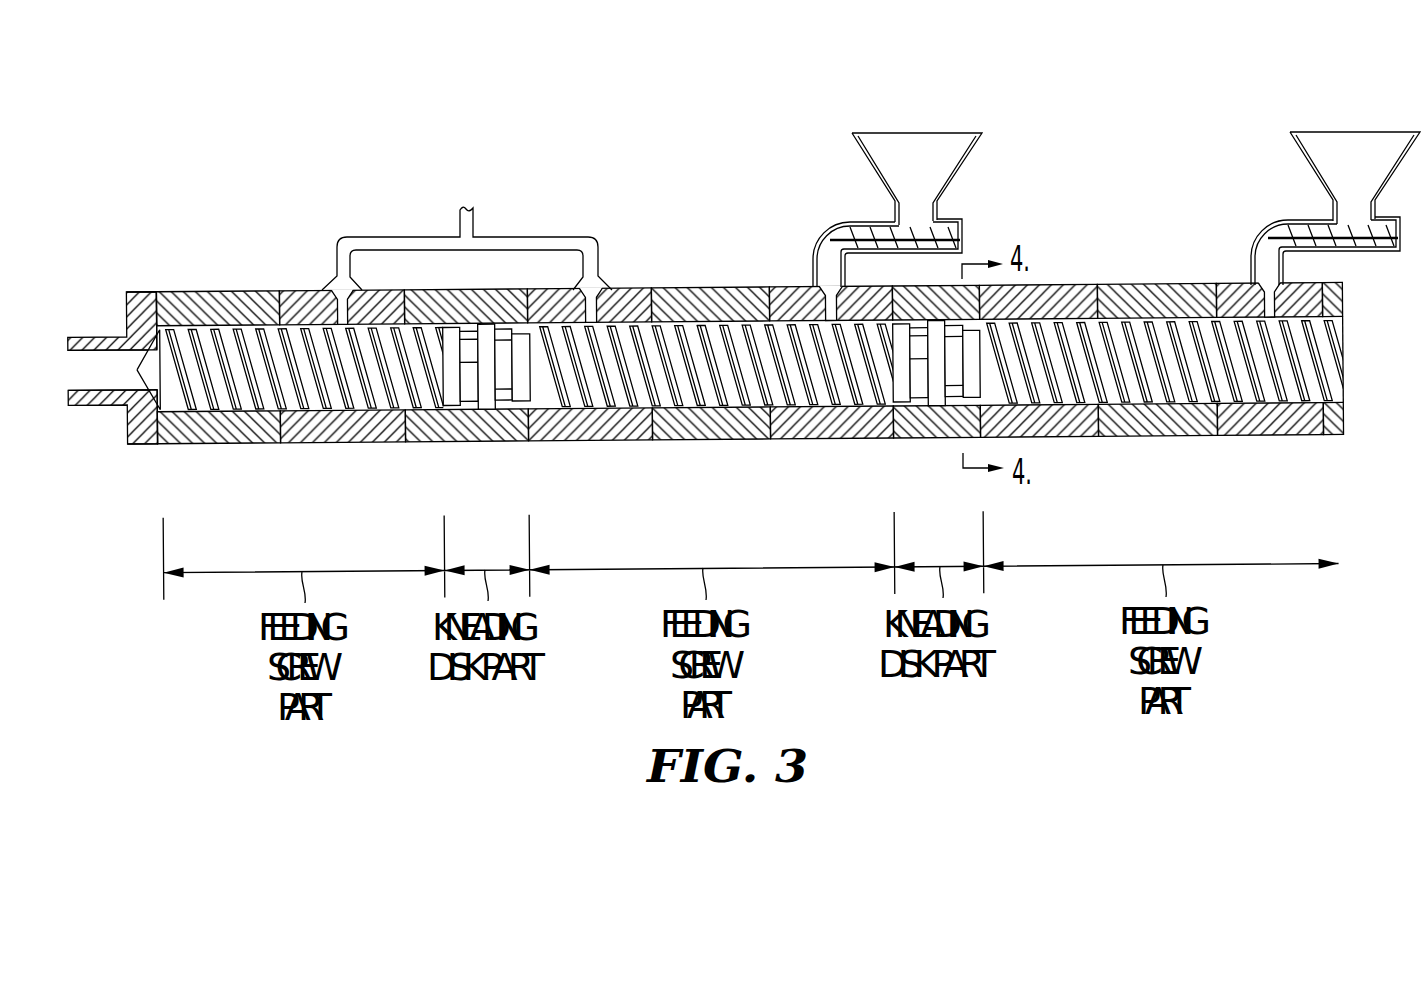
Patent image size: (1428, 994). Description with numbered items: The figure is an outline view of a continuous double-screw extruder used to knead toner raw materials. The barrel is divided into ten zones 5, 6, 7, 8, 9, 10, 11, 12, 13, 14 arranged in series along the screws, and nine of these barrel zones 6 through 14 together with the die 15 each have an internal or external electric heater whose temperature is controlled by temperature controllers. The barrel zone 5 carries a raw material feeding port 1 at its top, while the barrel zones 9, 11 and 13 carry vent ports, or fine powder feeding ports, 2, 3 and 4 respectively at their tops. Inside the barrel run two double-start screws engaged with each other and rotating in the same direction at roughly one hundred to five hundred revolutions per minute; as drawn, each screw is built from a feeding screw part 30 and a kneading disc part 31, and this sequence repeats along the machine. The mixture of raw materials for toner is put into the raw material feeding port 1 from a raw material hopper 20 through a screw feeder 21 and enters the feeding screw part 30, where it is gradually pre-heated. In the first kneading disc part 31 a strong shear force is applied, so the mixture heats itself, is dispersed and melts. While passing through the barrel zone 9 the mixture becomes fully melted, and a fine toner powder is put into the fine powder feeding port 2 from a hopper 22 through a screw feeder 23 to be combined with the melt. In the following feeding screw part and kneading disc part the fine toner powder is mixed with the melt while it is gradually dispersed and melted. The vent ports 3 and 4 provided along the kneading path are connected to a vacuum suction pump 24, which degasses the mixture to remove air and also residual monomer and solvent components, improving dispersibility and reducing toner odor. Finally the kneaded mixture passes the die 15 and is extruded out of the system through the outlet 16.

The raw material feeding port 1 is at (1258, 285).
The fine powder feeding port 2 is at (817, 289).
The vent port 3 is at (605, 289).
The vent port 4 is at (332, 289).
The barrel zone 5 is at (1273, 435).
The barrel zone 6 is at (1152, 436).
The barrel zone 7 is at (1063, 437).
The barrel zone 8 is at (902, 438).
The barrel zone 9 is at (826, 439).
The barrel zone 10 is at (703, 440).
The barrel zone 11 is at (590, 441).
The barrel zone 12 is at (443, 445).
The barrel zone 13 is at (340, 446).
The barrel zone 14 is at (214, 446).
The die 15 is at (143, 446).
The outlet 16 is at (90, 377).
The raw material hopper 20 is at (1380, 135).
The screw feeder 21 is at (1290, 222).
The hopper 22 is at (942, 136).
The screw feeder 23 is at (852, 226).
The vacuum suction pump 24 is at (460, 216).
The feeding screw part 30 is at (688, 327).
The kneading disc part 31 is at (488, 383).